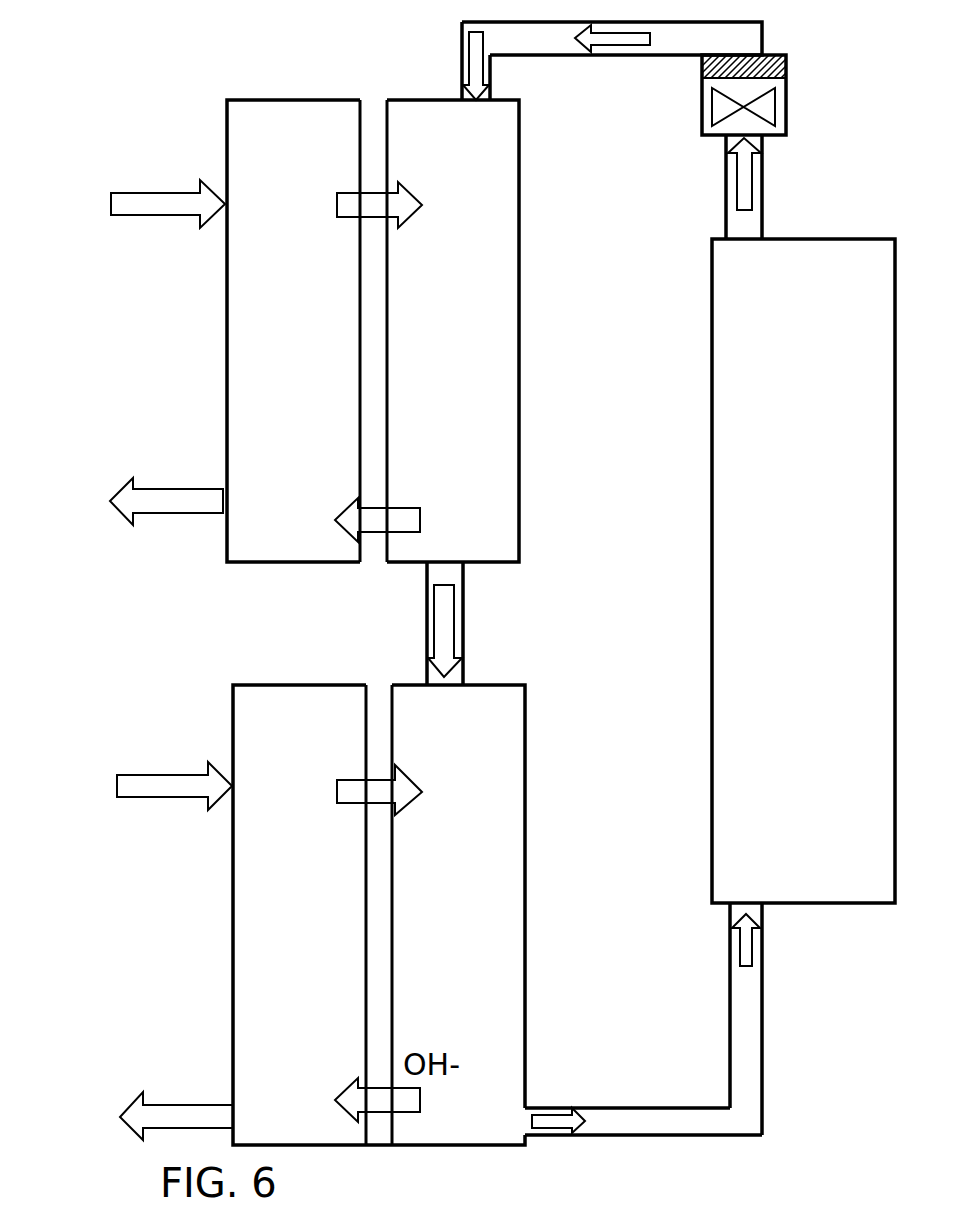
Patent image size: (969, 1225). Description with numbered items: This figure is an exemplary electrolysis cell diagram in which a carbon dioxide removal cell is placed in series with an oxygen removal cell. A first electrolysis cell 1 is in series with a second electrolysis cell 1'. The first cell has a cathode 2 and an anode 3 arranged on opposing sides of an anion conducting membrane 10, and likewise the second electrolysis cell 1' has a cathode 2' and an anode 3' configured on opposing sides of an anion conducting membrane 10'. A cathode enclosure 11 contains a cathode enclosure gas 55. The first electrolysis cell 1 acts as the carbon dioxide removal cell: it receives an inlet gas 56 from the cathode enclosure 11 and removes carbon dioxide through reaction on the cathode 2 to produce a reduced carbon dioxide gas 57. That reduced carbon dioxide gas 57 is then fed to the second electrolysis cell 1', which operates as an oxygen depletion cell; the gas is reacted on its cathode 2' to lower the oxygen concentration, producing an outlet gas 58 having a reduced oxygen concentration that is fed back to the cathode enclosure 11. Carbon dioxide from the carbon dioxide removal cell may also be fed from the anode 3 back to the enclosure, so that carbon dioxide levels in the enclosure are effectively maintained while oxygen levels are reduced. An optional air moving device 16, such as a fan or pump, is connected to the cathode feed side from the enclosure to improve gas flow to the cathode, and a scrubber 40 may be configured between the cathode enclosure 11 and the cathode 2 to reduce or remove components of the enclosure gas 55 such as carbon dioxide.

The first electrolysis cell 1 is at (496, 331).
The second electrolysis cell 1' is at (502, 896).
The cathode 2 is at (448, 147).
The cathode 2' is at (447, 713).
The anode 3 is at (191, 331).
The anode 3' is at (310, 915).
The anion conducting membrane 10 is at (495, 331).
The anion conducting membrane 10' is at (490, 915).
The cathode enclosure 11 is at (823, 265).
The air moving device 16 is at (774, 118).
The scrubber 40 is at (763, 53).
The cathode enclosure gas 55 is at (858, 285).
The inlet gas 56 is at (487, 66).
The reduced carbon dioxide gas 57 is at (438, 340).
The outlet gas 58 is at (578, 1108).